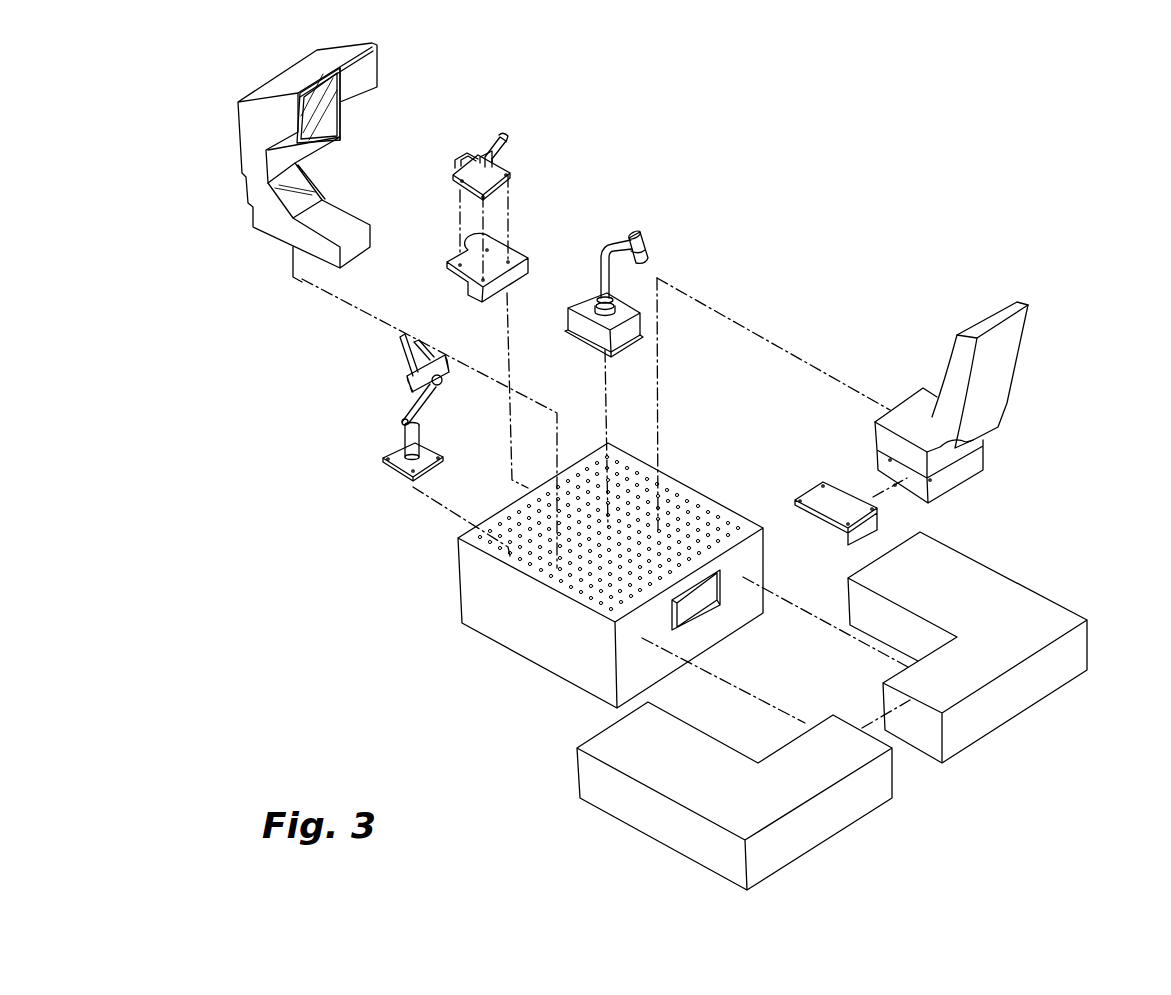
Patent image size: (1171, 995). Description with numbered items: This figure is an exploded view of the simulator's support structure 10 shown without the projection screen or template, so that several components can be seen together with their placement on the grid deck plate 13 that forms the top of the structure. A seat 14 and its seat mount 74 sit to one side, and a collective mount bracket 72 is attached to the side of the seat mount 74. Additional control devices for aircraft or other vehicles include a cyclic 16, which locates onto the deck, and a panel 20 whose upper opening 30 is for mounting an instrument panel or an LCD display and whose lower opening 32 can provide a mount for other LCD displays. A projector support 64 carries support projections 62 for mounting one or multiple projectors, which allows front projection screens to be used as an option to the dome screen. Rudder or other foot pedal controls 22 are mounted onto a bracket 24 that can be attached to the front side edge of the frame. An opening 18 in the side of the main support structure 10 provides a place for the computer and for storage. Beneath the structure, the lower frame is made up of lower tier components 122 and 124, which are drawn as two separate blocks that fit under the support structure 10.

The support structure 10 is at (583, 575).
The grid deck plate 13 is at (690, 498).
The seat 14 is at (918, 386).
The cyclic 16 is at (636, 233).
The opening 18 is at (697, 602).
The panel 20 is at (283, 162).
The foot pedal controls 22 is at (502, 138).
The bracket 24 is at (455, 262).
The upper opening 30 is at (327, 132).
The lower opening 32 is at (299, 182).
The support projections 62 is at (410, 342).
The projector support 64 is at (410, 399).
The collective mount bracket 72 is at (803, 493).
The seat mount 74 is at (885, 470).
The lower tier component 122 is at (577, 770).
The lower tier component 124 is at (1090, 645).